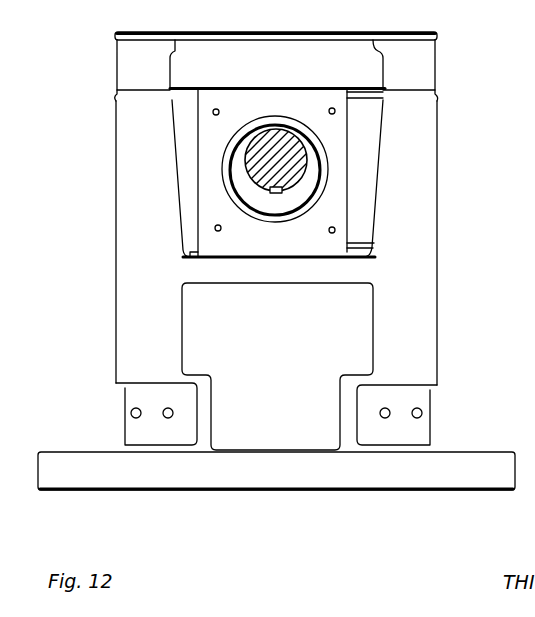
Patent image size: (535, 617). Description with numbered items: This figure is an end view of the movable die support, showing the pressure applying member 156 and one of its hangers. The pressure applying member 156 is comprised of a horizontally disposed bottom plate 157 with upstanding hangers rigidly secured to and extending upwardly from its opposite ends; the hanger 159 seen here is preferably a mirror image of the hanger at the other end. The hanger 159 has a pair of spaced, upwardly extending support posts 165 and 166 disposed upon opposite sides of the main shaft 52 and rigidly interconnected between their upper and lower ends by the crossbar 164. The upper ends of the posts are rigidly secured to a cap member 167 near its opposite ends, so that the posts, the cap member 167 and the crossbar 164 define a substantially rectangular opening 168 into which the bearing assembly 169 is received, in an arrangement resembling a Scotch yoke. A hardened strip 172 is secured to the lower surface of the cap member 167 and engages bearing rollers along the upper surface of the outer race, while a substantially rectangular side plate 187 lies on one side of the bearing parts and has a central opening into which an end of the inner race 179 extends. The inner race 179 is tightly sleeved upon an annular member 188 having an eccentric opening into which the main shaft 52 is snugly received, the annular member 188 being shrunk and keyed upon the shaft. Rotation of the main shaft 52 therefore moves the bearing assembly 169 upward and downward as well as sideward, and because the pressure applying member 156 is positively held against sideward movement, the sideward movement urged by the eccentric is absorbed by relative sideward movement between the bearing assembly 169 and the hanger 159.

The main shaft 52 is at (270, 128).
The pressure applying member 156 is at (318, 492).
The bottom plate 157 is at (343, 473).
The hanger 159 is at (418, 292).
The crossbar 164 is at (260, 268).
The support post 165 is at (135, 192).
The support post 166 is at (415, 215).
The cap member 167 is at (283, 43).
The rectangular opening 168 is at (182, 112).
The bearing assembly 169 is at (285, 86).
The hardened strip 172 is at (360, 90).
The inner race 179 is at (228, 185).
The side plate 187 is at (305, 243).
The annular member 188 is at (310, 173).